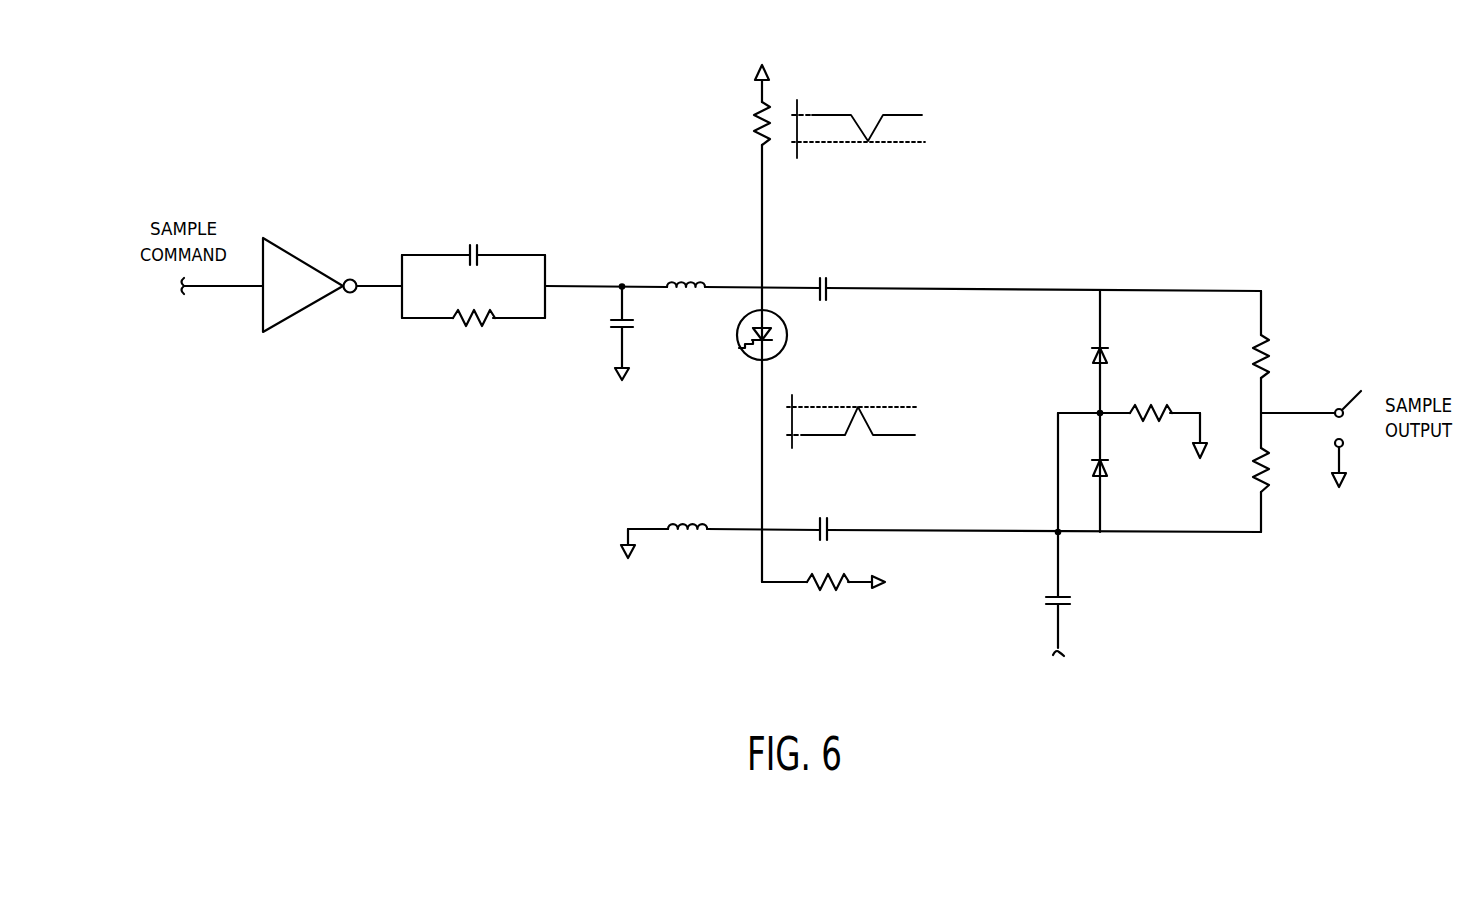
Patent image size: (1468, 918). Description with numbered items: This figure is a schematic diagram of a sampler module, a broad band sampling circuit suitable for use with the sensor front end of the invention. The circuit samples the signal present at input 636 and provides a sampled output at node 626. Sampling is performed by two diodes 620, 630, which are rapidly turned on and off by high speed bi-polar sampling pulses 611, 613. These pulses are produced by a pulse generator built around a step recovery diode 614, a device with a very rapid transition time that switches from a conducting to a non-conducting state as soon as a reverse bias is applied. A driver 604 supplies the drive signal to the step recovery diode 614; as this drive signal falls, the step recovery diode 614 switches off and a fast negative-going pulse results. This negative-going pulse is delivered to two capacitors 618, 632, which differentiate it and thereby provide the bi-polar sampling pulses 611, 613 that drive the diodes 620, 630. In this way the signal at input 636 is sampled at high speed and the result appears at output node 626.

The driver 604 is at (298, 255).
The sampling pulse 611 is at (879, 92).
The sampling pulse 613 is at (915, 425).
The step recovery diode 614 is at (787, 337).
The capacitor 618 is at (830, 282).
The diode 620 is at (1108, 356).
The node 626 is at (1321, 425).
The diode 630 is at (1108, 468).
The capacitor 632 is at (831, 522).
The input 636 is at (1064, 653).